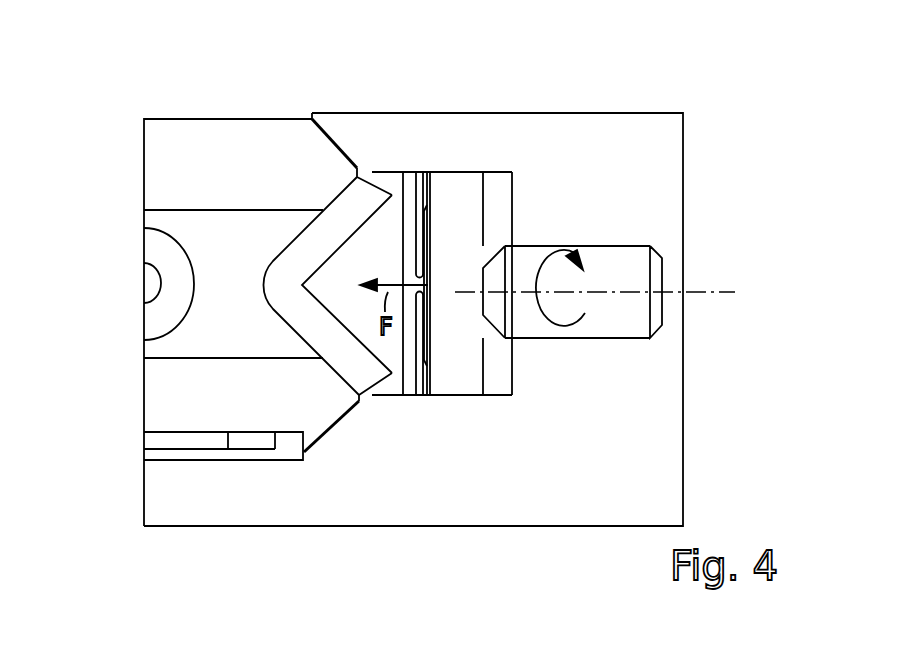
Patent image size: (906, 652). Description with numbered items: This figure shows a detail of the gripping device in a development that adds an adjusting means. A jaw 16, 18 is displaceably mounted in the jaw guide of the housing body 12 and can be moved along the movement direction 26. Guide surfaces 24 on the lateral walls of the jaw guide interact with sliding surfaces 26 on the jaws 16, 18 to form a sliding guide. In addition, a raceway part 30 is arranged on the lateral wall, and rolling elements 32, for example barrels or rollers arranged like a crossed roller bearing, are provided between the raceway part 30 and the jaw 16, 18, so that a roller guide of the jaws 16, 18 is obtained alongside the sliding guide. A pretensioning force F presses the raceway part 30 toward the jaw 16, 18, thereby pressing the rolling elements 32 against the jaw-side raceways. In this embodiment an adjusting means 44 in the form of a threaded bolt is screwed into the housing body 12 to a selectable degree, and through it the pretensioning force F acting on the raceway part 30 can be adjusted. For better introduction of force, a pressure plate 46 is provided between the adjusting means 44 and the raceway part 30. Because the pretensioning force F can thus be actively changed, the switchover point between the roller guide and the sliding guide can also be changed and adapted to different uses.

The housing body 12 is at (575, 155).
The jaw 16 is at (172, 150).
The jaw 18 is at (212, 274).
The guide surface 24 is at (328, 205).
The sliding surface 26 is at (322, 135).
The raceway part 30 is at (388, 266).
The rolling element 32 is at (340, 210).
The adjusting means 44 is at (622, 265).
The pressure plate 46 is at (458, 197).